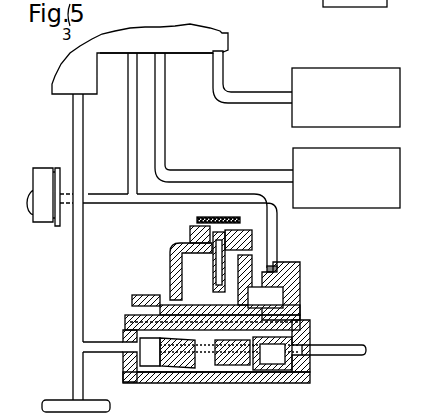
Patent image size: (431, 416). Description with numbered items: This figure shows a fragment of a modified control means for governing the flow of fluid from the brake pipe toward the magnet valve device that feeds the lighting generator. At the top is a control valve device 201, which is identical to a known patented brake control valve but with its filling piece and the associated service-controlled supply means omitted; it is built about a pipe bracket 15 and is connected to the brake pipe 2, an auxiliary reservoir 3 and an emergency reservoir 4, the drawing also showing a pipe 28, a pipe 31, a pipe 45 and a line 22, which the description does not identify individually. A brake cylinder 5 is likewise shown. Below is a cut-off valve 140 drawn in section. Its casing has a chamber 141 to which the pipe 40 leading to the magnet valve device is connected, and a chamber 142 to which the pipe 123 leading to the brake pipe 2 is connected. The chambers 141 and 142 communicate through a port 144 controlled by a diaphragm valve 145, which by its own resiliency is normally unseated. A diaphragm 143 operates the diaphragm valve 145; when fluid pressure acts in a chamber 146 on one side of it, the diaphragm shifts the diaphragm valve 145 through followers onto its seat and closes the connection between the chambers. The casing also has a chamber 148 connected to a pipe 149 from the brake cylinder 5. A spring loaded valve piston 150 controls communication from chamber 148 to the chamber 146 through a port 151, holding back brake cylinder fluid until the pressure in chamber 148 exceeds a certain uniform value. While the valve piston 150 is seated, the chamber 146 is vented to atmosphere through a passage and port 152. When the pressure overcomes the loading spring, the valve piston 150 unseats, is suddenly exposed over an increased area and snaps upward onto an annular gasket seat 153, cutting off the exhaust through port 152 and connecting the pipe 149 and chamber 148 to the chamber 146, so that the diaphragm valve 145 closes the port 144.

The control valve device 201 is at (236, 46).
The pipe bracket 15 is at (200, 46).
The pipe 28 is at (228, 93).
The auxiliary reservoir 3 is at (326, 78).
The emergency reservoir 4 is at (300, 156).
The pipe 45 is at (128, 152).
The pipe 31 is at (163, 155).
The brake cylinder 5 is at (52, 166).
The column 22 is at (73, 313).
The brake pipe 2 is at (63, 390).
The pipe 123 is at (106, 340).
The pipe 149 is at (278, 229).
The cut-off valve 140 is at (227, 312).
The exhaust passage and port 152 is at (192, 233).
The annular gasket seat 153 is at (172, 242).
The chamber 148 is at (296, 294).
The spring loaded valve piston 150 is at (295, 294).
The chamber 146 is at (163, 297).
The port 151 is at (176, 300).
The diaphragm 143 is at (125, 316).
The chamber 142 is at (163, 376).
The diaphragm valve 145 is at (197, 372).
The port 144 is at (222, 368).
The chamber 141 is at (272, 372).
The pipe 40 is at (340, 348).